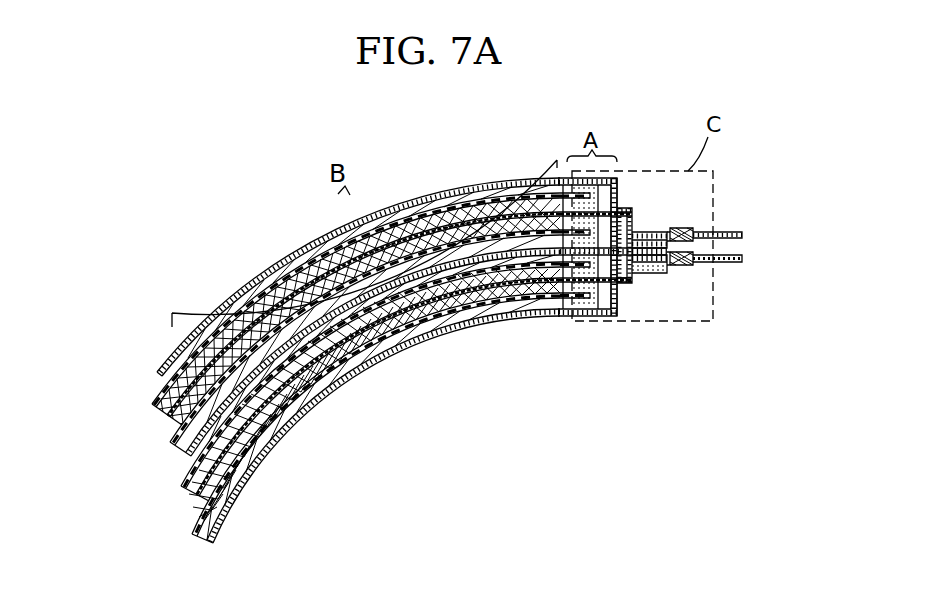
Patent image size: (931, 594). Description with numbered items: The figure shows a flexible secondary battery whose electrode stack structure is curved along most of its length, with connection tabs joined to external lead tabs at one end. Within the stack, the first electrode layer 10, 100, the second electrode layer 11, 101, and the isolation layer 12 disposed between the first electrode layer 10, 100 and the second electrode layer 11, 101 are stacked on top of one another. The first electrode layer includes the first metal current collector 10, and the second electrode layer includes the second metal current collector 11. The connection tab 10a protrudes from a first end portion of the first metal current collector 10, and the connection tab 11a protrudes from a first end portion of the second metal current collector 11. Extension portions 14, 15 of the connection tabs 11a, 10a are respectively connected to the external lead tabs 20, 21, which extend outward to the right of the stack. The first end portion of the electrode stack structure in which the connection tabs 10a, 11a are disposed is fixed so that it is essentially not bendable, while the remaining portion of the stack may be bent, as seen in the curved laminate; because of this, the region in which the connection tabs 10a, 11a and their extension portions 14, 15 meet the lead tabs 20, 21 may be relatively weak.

The first metal current collector 10 is at (168, 445).
The connection tab 10a is at (622, 210).
The second metal current collector 11 is at (152, 373).
The connection tab 11a is at (617, 302).
The isolation layer 12 is at (152, 404).
The extension portion 14 is at (660, 233).
The extension portion 15 is at (650, 263).
The lead tab 20 is at (728, 233).
The lead tab 21 is at (728, 263).
The first electrode layer 100 is at (165, 402).
The second electrode layer 101 is at (160, 381).